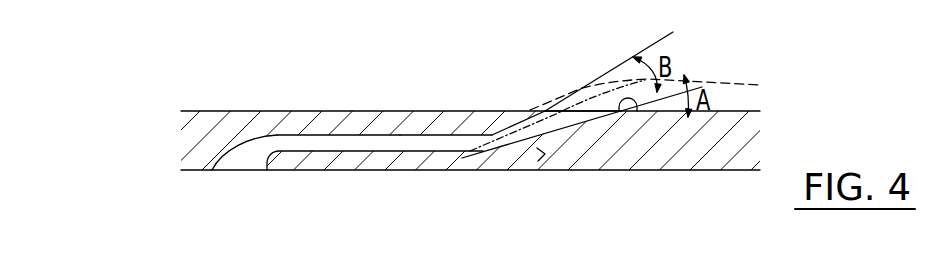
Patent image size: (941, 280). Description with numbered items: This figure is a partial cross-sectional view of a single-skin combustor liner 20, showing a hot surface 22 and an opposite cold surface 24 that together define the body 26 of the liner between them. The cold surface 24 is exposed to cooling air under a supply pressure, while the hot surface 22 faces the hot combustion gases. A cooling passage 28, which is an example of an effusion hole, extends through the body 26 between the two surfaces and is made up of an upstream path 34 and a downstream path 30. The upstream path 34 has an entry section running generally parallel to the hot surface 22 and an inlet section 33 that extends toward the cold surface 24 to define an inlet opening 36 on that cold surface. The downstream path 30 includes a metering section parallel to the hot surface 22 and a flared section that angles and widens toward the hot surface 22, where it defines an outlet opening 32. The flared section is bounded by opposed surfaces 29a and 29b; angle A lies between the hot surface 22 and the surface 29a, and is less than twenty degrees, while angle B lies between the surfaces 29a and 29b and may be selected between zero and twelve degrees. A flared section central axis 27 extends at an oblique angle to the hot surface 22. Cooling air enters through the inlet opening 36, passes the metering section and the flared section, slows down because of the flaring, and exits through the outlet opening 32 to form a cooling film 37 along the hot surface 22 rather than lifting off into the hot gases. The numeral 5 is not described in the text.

The optical fiber 5 is at (509, 137).
The combustor liner 20 is at (455, 83).
The hot surface 22 is at (338, 90).
The cold surface 24 is at (470, 207).
The body 26 is at (430, 174).
The flared section central axis 27 is at (557, 159).
The cooling passage 28 is at (446, 94).
The surface of flared section facing away from cold surface 29a is at (582, 160).
The opposed surface of flared section 29b is at (582, 83).
The downstream path 30 is at (566, 73).
The outlet opening 32 is at (649, 171).
The inlet section 33 is at (236, 186).
The upstream path 34 is at (375, 194).
The inlet opening 36 is at (239, 197).
The cooling film 37 is at (662, 56).